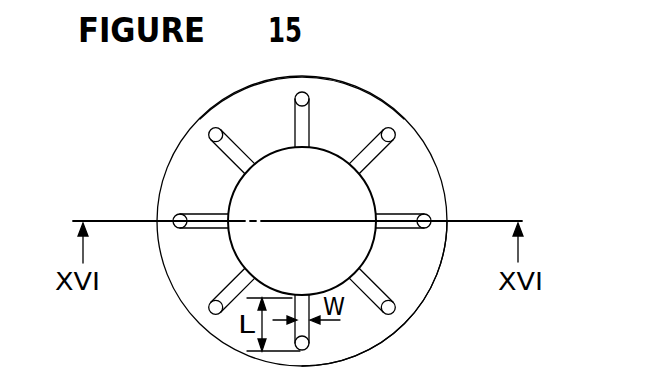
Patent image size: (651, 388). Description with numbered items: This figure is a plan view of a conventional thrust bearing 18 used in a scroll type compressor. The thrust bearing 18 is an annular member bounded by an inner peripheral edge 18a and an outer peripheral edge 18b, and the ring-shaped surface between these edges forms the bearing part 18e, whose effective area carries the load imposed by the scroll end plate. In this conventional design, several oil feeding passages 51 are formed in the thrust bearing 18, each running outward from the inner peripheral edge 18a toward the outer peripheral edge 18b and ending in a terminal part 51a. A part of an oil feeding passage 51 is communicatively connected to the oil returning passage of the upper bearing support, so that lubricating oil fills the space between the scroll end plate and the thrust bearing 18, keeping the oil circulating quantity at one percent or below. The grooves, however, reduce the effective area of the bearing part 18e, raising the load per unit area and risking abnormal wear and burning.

The thrust bearing 18 is at (448, 195).
The inner peripheral edge 18a is at (362, 185).
The outer peripheral edge 18b is at (443, 260).
The bearing part 18e is at (357, 112).
The oil feeding passage 51 is at (394, 302).
The terminal part 51a is at (392, 130).